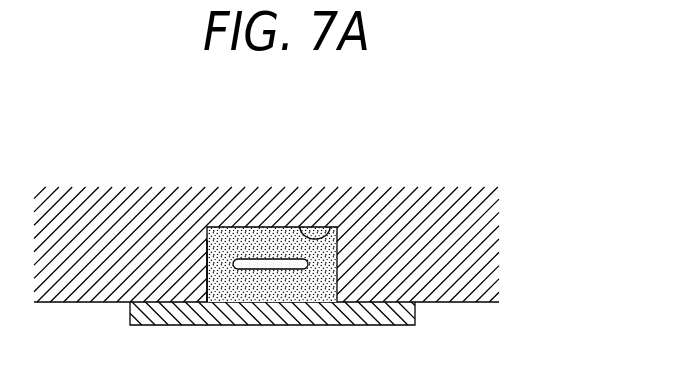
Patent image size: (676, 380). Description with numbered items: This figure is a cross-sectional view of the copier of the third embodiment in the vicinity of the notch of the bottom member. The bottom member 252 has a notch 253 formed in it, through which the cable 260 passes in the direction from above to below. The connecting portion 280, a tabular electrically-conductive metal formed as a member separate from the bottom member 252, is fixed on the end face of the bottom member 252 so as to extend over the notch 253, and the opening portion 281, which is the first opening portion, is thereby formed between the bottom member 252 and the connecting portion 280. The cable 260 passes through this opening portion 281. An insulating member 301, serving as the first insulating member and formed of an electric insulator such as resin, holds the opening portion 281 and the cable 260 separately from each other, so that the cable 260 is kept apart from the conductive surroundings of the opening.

The bottom member 252 is at (498, 255).
The notch 253 is at (330, 227).
The cable 260 is at (240, 255).
The connecting portion 280 is at (392, 325).
The opening portion 281 is at (207, 227).
The insulating member 301 is at (207, 262).